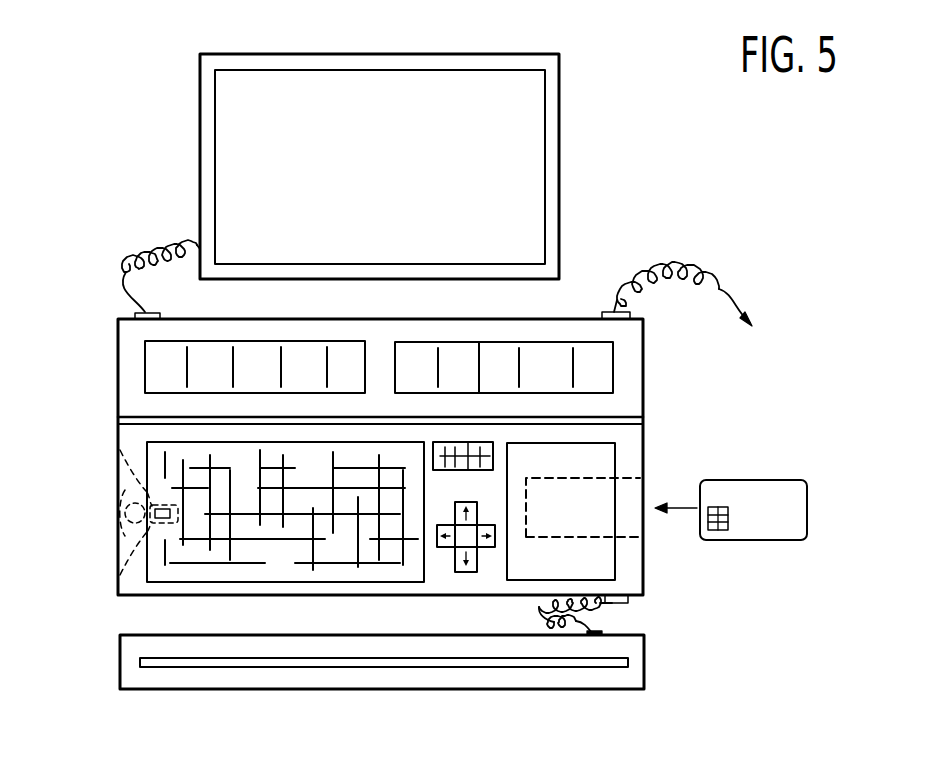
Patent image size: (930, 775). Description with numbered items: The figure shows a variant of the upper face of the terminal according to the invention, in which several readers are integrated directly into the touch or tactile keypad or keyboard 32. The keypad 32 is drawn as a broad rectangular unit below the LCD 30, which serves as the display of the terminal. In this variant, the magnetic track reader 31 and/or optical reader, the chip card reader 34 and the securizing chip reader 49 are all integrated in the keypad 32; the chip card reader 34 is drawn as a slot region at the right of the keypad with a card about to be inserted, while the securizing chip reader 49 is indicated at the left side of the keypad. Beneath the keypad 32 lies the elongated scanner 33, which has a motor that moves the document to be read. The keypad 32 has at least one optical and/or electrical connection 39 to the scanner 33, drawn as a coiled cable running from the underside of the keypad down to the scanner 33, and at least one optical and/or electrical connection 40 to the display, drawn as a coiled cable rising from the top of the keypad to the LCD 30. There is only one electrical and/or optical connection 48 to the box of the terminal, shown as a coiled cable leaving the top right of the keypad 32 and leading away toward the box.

The LCD 30 is at (387, 174).
The optical and/or electrical connection to the display 40 is at (143, 250).
The electrical and/or optical connection to the box 48 is at (693, 270).
The touch or tactile keypad or keyboard 32 is at (118, 372).
The magnetic track reader 31 is at (646, 418).
The chip card reader 34 is at (632, 478).
The optical and/or electrical connection to the scanner 39 is at (613, 609).
The scanner 33 is at (630, 675).
The securizing chip reader 49 is at (130, 485).